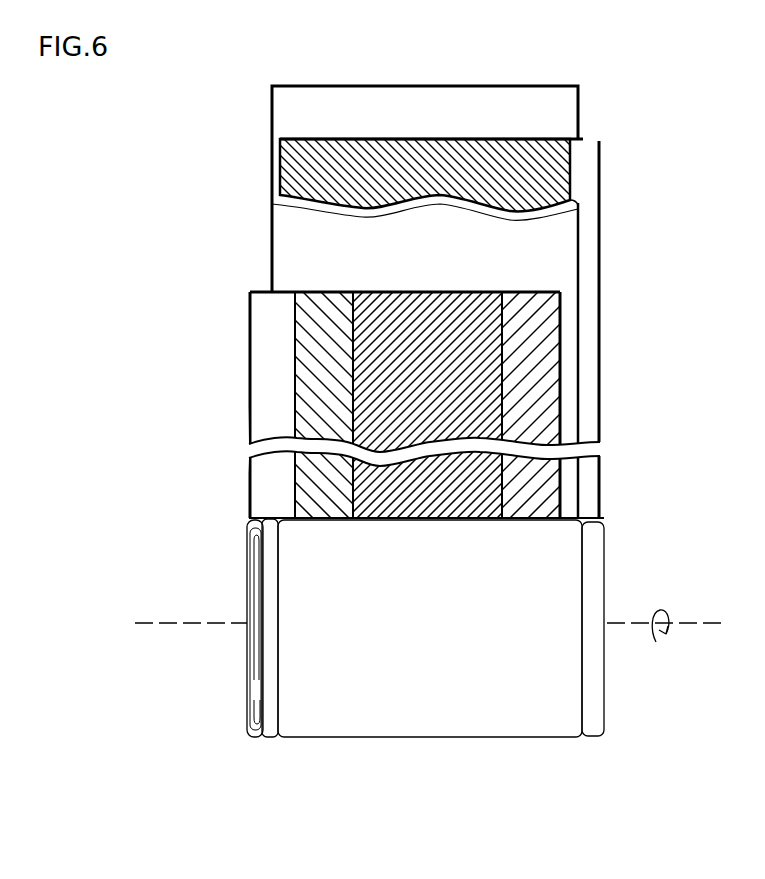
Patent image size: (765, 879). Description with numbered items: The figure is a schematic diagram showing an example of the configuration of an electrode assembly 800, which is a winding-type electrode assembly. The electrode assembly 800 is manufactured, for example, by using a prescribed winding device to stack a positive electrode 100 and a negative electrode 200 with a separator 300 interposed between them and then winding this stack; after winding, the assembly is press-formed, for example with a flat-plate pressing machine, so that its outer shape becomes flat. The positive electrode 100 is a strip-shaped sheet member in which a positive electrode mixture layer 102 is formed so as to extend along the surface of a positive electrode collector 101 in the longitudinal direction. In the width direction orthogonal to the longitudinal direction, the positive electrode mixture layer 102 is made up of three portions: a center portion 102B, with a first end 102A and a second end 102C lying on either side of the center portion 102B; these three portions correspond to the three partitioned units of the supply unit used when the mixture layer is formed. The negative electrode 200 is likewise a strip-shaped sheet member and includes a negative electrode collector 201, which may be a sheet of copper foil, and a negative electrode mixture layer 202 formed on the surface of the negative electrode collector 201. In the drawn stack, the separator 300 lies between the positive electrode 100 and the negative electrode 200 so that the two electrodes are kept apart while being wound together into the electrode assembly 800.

The positive electrode 100 is at (118, 175).
The positive electrode collector 101 is at (263, 298).
The positive electrode mixture layer 102 is at (170, 153).
The first end 102A is at (317, 292).
The center portion 102B is at (425, 300).
The second end 102C is at (527, 302).
The negative electrode 200 is at (668, 68).
The negative electrode collector 201 is at (588, 153).
The negative electrode mixture layer 202 is at (538, 160).
The separator 300 is at (338, 86).
The electrode assembly 800 is at (580, 764).